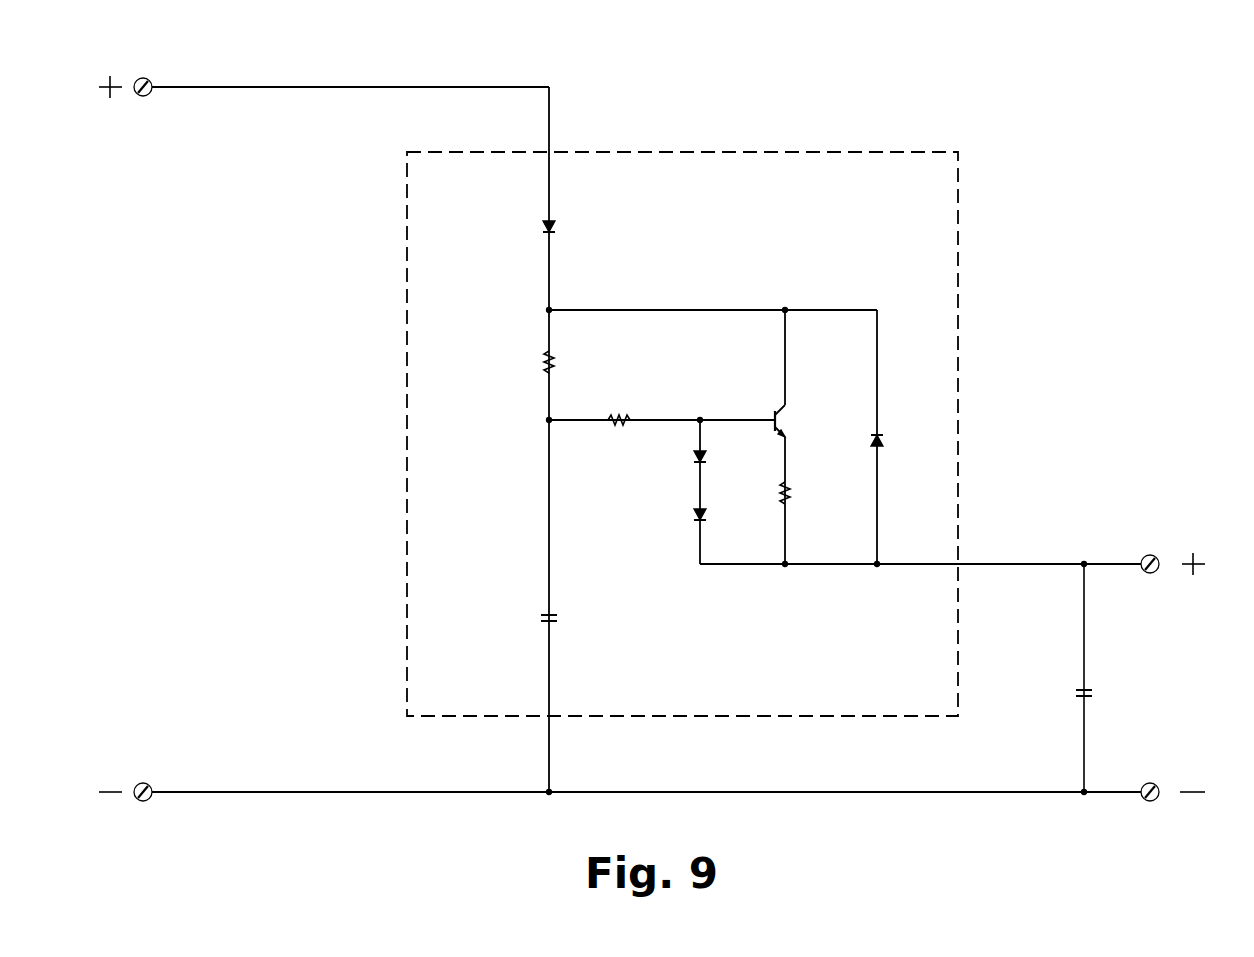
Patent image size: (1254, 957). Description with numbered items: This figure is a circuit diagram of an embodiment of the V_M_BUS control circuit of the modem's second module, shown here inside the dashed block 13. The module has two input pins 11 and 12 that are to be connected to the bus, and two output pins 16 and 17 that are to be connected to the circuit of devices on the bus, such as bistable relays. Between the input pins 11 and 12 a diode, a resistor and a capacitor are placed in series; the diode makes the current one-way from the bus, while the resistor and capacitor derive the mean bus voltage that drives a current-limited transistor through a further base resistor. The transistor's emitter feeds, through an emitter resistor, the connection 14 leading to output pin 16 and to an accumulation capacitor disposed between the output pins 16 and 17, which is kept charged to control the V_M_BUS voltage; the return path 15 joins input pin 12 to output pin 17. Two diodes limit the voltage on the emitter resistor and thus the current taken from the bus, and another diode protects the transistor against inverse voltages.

The input pin 11 is at (324, 96).
The input pin 12 is at (324, 779).
The VM_BUS control circuit 13 is at (682, 473).
The connection 14 is at (1049, 670).
The ground output line 15 is at (845, 781).
The output pin 16 is at (1173, 553).
The output pin 17 is at (1172, 781).